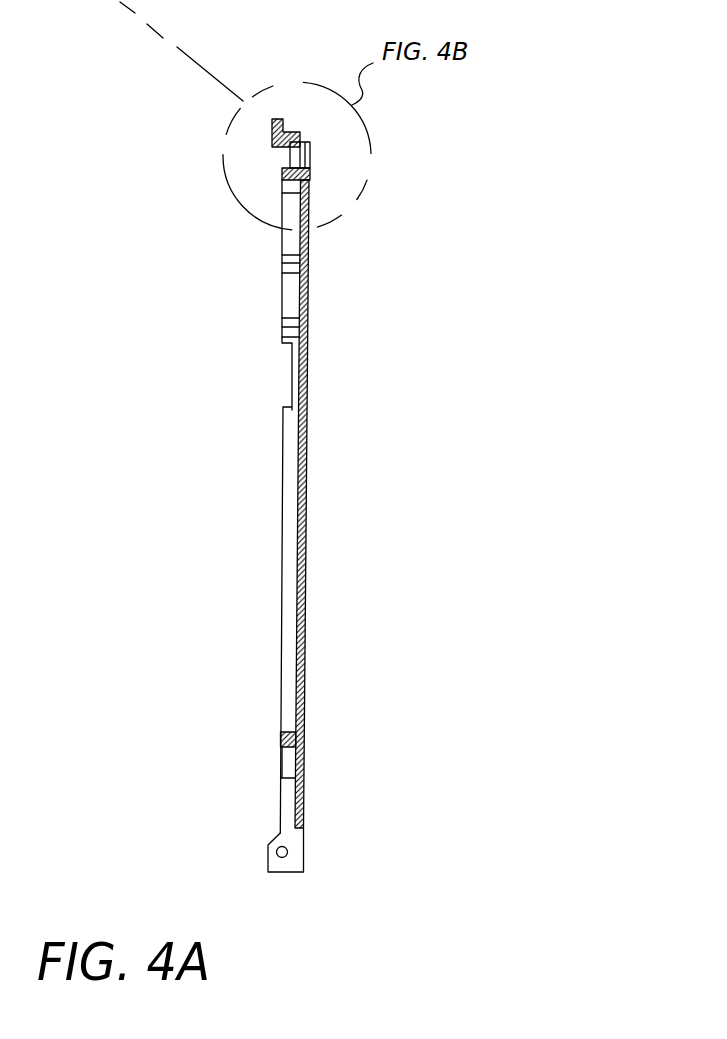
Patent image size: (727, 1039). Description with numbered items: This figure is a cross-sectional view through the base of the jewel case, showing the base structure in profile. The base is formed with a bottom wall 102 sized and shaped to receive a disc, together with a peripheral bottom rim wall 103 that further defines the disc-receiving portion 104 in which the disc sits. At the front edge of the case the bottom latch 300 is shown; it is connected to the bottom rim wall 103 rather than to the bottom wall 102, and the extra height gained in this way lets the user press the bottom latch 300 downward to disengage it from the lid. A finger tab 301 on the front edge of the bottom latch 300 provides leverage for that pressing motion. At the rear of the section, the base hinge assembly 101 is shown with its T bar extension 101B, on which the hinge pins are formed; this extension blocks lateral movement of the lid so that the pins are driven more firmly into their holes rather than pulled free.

The base hinge assembly 101 is at (339, 847).
The T bar extension 101B is at (295, 843).
The bottom wall 102 is at (308, 347).
The bottom rim wall 103 is at (280, 757).
The disc-receiving portion 104 is at (256, 296).
The bottom latch 300 is at (271, 132).
The finger tab 301 is at (283, 120).